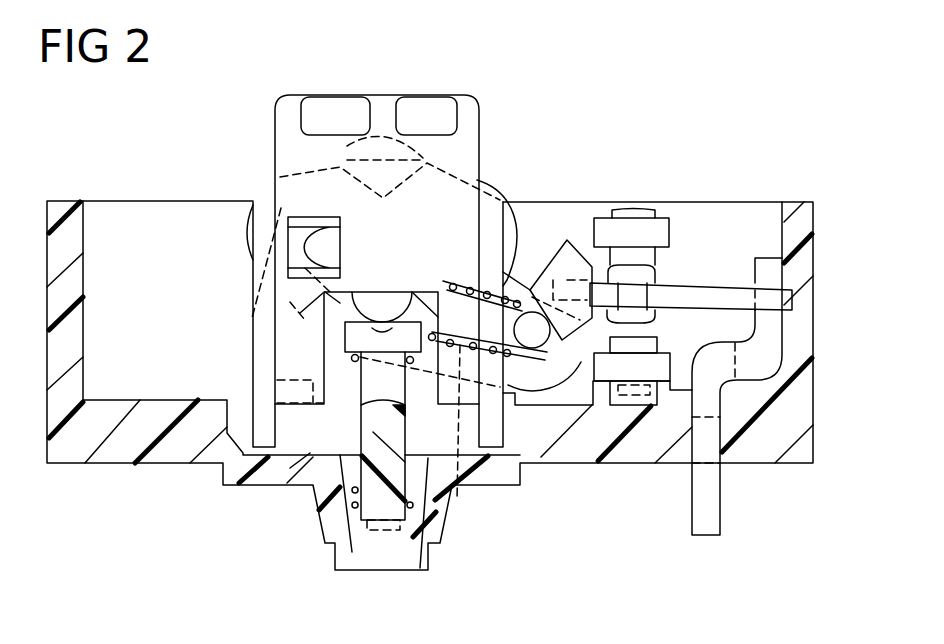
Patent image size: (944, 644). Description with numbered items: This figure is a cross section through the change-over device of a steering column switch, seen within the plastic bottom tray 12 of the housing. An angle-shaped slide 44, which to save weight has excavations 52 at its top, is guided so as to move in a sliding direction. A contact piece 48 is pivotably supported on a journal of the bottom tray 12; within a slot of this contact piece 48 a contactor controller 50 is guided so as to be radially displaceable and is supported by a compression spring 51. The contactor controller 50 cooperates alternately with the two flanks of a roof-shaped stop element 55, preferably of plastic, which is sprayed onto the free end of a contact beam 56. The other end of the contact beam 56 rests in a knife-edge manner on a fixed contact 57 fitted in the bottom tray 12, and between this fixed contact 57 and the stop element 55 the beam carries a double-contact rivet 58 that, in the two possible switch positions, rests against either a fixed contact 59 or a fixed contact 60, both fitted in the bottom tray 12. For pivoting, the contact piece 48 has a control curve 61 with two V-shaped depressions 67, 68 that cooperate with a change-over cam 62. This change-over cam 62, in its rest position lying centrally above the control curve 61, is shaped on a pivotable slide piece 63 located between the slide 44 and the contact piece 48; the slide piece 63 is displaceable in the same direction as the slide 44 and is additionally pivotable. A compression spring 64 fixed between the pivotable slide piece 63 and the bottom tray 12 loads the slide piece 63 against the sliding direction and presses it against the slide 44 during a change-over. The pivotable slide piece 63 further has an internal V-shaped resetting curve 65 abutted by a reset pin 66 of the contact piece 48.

The bottom tray 12 is at (770, 453).
The slide 44 is at (470, 119).
The contact piece 48 is at (568, 395).
The contactor controller 50 is at (540, 313).
The compression spring 51 is at (455, 412).
The excavations 52 is at (422, 107).
The stop element 55 is at (569, 240).
The contact beam 56 is at (717, 300).
The fixed contact 57 is at (767, 342).
The double-contact rivet 58 is at (648, 314).
The fixed contact 59 is at (663, 228).
The fixed contact 60 is at (658, 377).
The control curve 61 is at (413, 227).
The change-over cam 62 is at (348, 186).
The pivotable slide piece 63 is at (477, 203).
The compression spring 64 is at (417, 503).
The resetting curve 65 is at (327, 317).
The reset pin 66 is at (381, 297).
The V-shaped depression 67 is at (420, 243).
The V-shaped depression 68 is at (330, 157).